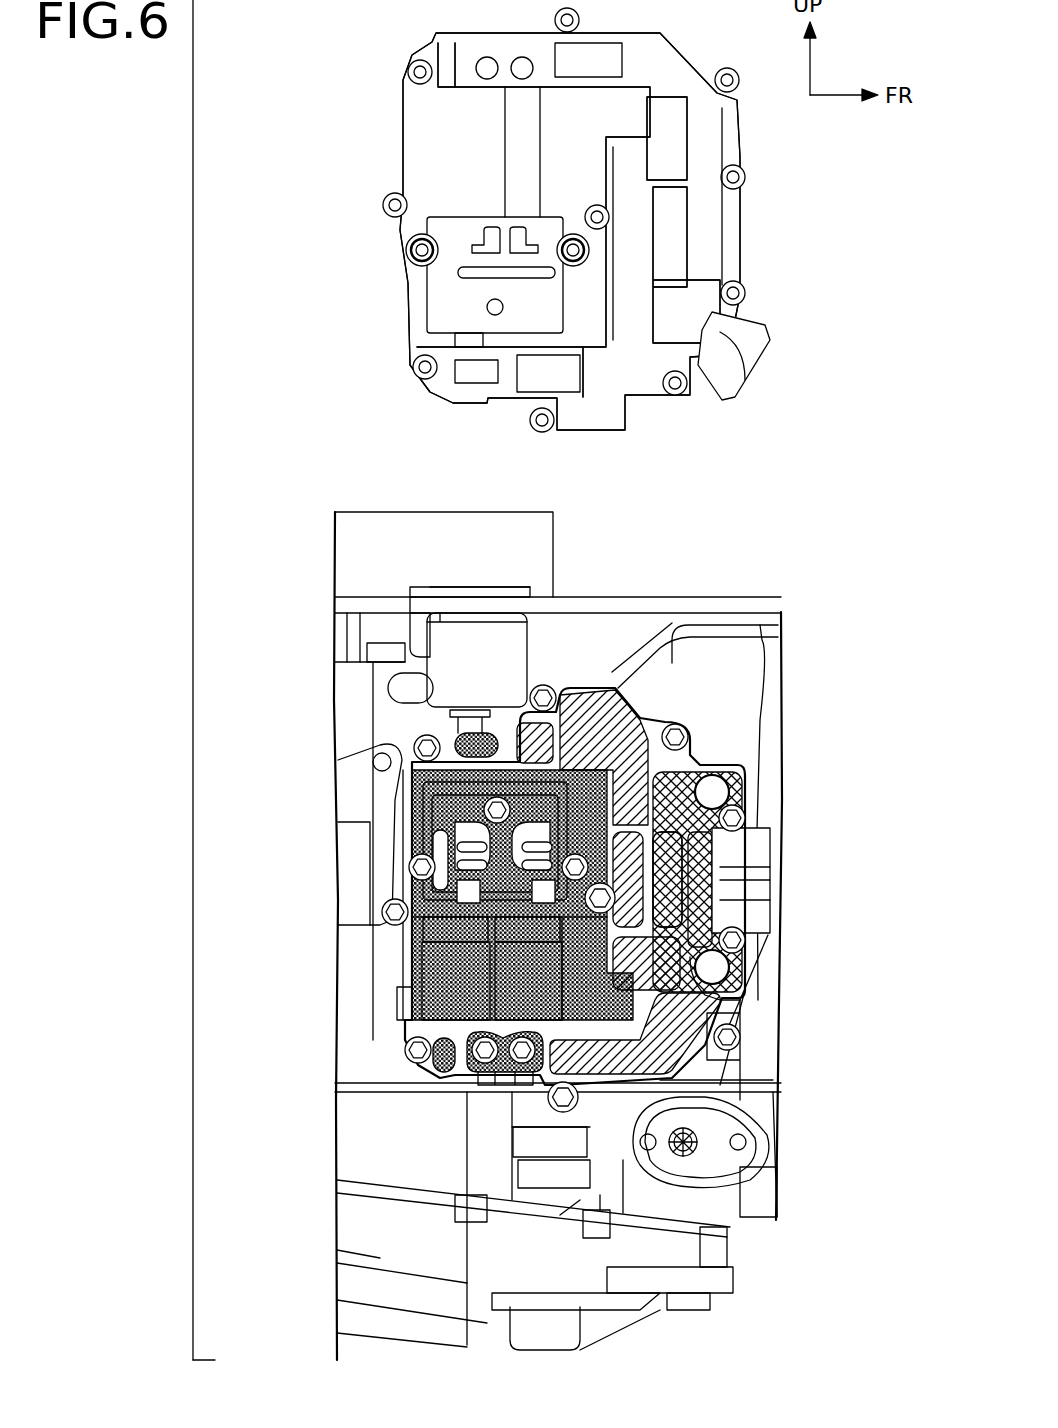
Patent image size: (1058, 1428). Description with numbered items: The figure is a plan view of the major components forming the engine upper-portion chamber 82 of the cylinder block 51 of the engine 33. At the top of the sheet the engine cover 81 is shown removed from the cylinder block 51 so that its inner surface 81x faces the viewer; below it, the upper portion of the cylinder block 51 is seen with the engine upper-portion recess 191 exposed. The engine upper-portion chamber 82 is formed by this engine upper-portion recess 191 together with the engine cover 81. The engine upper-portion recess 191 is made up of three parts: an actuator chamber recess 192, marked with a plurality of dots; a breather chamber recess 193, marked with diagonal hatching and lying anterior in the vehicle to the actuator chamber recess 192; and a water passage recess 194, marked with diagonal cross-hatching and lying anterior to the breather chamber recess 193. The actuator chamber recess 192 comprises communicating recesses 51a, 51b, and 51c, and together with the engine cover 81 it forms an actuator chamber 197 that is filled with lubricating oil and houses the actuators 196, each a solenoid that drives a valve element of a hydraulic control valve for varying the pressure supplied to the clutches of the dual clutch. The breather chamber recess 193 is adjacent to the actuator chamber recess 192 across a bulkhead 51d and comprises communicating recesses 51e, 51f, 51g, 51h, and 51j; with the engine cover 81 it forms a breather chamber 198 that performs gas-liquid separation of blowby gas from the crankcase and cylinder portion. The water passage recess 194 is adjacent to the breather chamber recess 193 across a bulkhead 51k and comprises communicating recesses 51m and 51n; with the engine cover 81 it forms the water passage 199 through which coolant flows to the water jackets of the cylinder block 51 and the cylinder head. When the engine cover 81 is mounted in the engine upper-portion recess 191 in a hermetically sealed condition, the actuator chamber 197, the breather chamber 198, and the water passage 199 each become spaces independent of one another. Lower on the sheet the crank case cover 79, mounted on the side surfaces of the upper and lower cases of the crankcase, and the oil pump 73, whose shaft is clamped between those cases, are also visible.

The engine cover 81 is at (400, 105).
The inner surface 81x is at (440, 160).
The engine upper-portion chamber 82 is at (668, 558).
The engine 33 is at (810, 570).
The cylinder block 51 is at (750, 610).
The recess 51a is at (660, 1062).
The recess 51b is at (430, 742).
The recess 51c is at (435, 1060).
The bulkhead 51d is at (705, 800).
The recess 51e is at (535, 735).
The recess 51f is at (615, 688).
The recess 51g is at (712, 935).
The recess 51h is at (735, 980).
The recess 51j is at (738, 1037).
The bulkhead 51k is at (700, 900).
The recess 51m is at (720, 848).
The recess 51n is at (640, 790).
The engine upper-portion recess 191 is at (613, 690).
The actuator chamber recess 192 is at (500, 1075).
The breather chamber recess 193 is at (690, 750).
The water passage recess 194 is at (720, 875).
The actuators 196 is at (450, 985).
The actuator chamber 197 is at (318, 1135).
The breather chamber 198 is at (800, 685).
The water passage 199 is at (800, 855).
The crank case cover 79 is at (355, 1240).
The oil pump 73 is at (600, 1325).